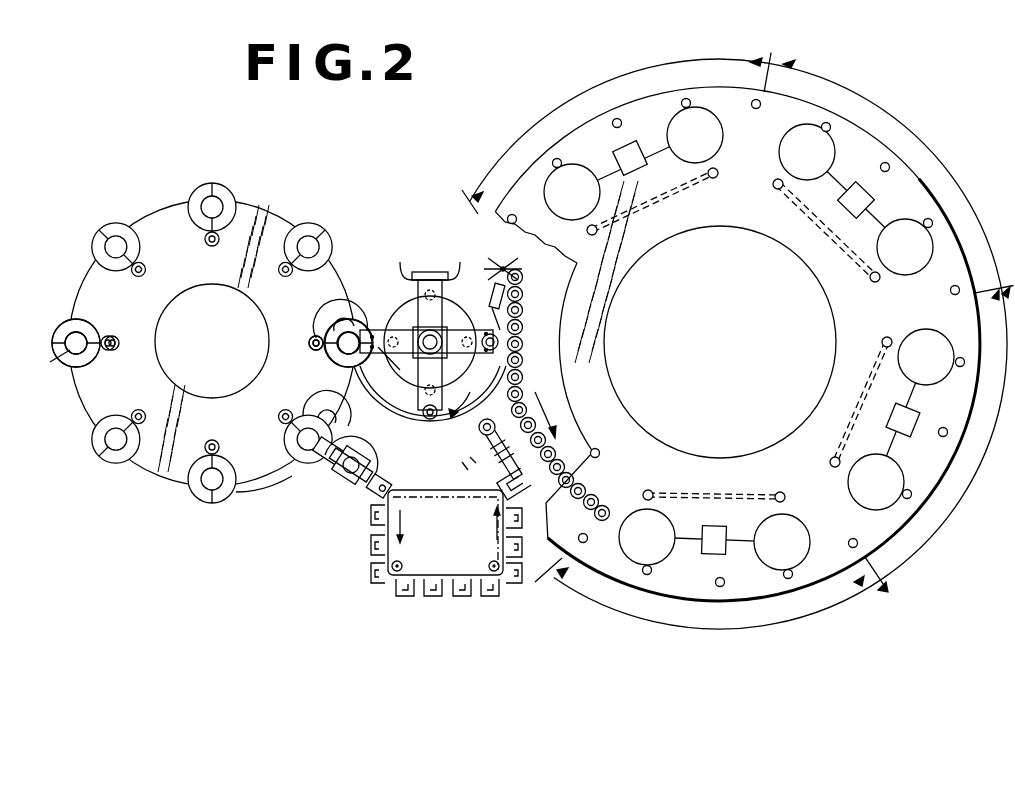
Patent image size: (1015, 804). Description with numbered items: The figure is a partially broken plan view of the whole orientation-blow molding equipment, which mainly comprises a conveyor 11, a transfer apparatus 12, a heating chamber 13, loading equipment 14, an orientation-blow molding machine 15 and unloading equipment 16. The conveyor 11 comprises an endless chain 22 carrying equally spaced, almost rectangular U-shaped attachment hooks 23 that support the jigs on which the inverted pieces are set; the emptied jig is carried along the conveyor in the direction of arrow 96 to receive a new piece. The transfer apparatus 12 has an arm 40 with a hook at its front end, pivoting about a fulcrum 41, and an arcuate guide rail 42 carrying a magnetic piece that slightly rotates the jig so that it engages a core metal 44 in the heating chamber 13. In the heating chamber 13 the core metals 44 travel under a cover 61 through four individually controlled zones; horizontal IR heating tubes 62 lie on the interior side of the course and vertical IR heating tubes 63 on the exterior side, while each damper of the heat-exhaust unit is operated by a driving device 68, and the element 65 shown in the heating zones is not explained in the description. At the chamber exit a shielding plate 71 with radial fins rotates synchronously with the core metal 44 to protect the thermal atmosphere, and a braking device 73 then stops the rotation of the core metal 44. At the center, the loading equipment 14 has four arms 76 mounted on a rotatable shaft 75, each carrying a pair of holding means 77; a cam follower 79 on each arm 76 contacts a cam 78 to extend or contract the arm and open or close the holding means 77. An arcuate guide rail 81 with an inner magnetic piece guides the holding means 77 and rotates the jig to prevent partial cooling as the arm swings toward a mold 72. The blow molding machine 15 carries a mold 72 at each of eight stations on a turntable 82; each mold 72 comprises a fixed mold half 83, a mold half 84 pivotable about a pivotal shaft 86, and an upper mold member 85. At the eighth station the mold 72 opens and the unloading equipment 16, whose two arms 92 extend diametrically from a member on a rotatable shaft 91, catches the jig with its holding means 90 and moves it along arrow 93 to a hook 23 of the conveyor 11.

The conveyor 11 is at (372, 590).
The transfer apparatus 12 is at (477, 441).
The heating chamber 13 is at (722, 57).
The loading equipment 14 is at (418, 328).
The orientation-blow molding machine 15 is at (190, 176).
The unloading equipment 16 is at (352, 498).
The endless chain 22 is at (410, 598).
The attachment hooks 23 is at (462, 598).
The arm 40 is at (490, 458).
The fulcrum 41 is at (489, 424).
The arcuate guide rail 42 is at (512, 490).
The core metal 44 is at (523, 365).
The cover 61 is at (800, 432).
The IR heating tubes 62 is at (678, 196).
The IR heating tubes 63 is at (828, 123).
The work station holder 65 is at (916, 333).
The driving device 68 is at (872, 201).
The shielding plate 71 is at (501, 266).
The mold 72 is at (310, 224).
The braking device 73 is at (497, 303).
The rotatable shaft 75 is at (410, 356).
The arm 76 is at (408, 326).
The holding means 77 is at (414, 271).
The cam 78 is at (490, 318).
The cam follower 79 is at (440, 380).
The arcuate guide rail 81 is at (420, 416).
The turntable 82 is at (165, 304).
The mold half 83 is at (68, 322).
The mold half 84 is at (75, 360).
The upper mold member 85 is at (92, 324).
The pivotal shaft 86 is at (114, 347).
The holding means 90 is at (378, 502).
The rotatable shaft 91 is at (346, 494).
The arms 92 is at (280, 493).
The arrow 93 is at (388, 444).
The arrow 96 is at (402, 524).